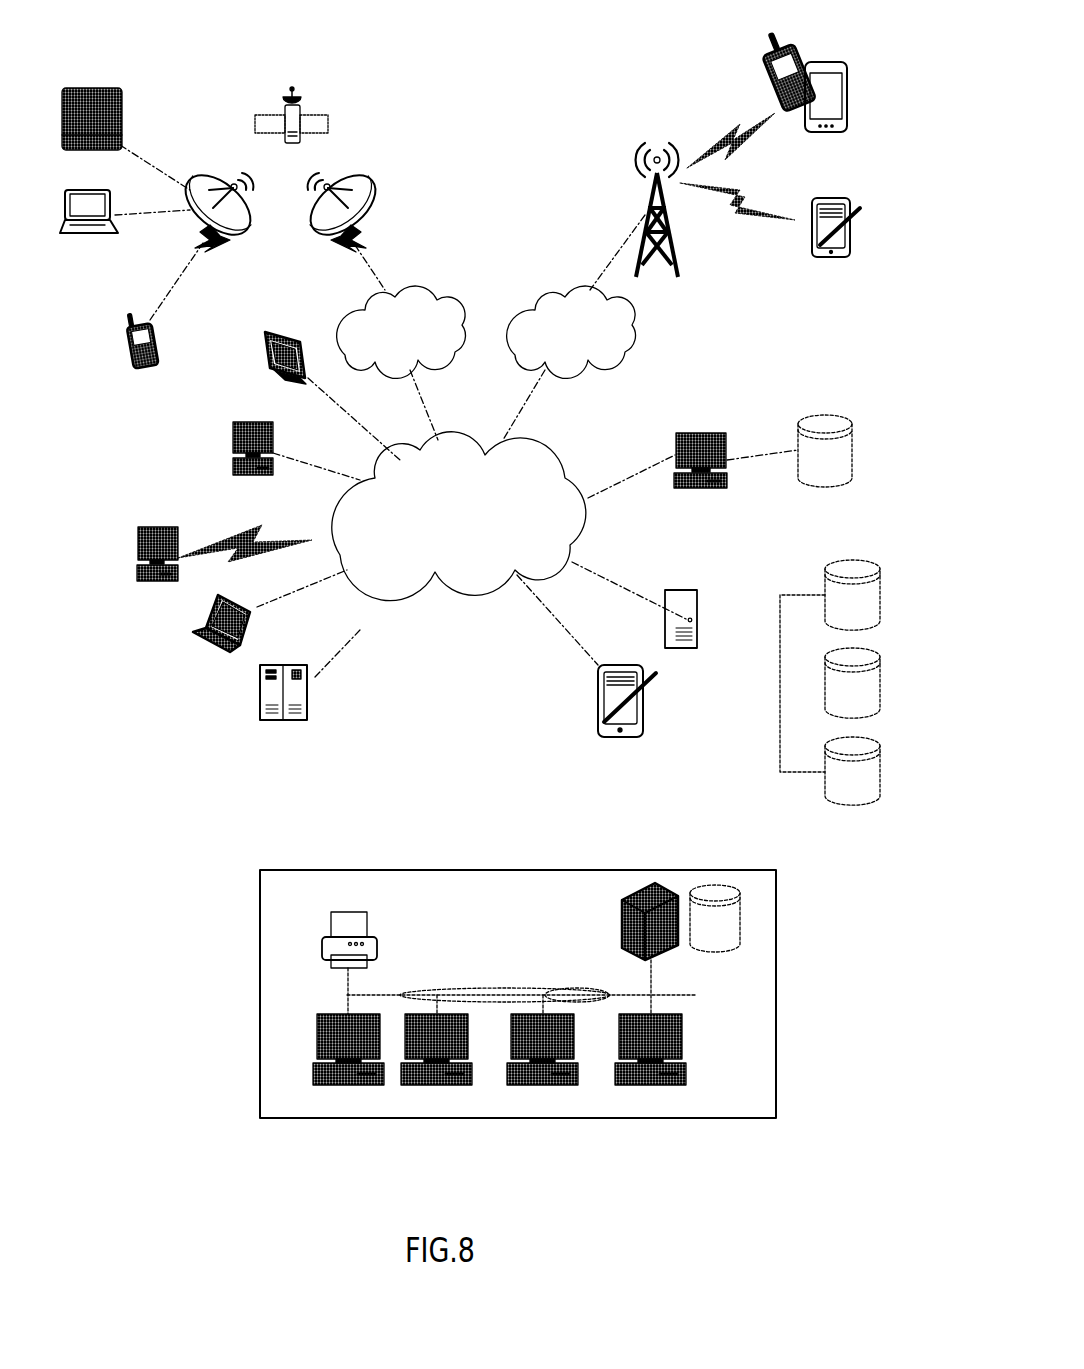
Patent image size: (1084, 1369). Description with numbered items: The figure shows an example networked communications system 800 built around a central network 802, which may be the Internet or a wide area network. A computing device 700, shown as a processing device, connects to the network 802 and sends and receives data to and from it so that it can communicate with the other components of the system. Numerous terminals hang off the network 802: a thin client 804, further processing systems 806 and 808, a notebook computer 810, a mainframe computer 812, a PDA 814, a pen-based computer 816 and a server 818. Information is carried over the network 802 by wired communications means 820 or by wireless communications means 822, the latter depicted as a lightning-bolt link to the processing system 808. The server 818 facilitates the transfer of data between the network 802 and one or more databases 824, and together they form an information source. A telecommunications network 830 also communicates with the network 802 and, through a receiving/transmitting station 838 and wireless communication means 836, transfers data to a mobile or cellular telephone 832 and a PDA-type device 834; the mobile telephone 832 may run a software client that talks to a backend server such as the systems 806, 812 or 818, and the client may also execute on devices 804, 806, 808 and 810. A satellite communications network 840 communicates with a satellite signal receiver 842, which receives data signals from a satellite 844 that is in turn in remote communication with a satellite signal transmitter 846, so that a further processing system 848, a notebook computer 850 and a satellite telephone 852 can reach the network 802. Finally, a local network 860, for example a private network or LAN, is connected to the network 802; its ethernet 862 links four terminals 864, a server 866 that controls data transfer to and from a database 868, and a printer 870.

The networked communications system 800 is at (957, 28).
The network 802 is at (459, 516).
The thin client 804 is at (263, 365).
The further processing system 806 is at (230, 445).
The further processing system 808 is at (135, 563).
The notebook computer 810 is at (190, 630).
The mainframe computer 812 is at (258, 690).
The PDA 814 is at (595, 720).
The pen-based computer 816 is at (825, 451).
The server 818 is at (685, 590).
The wired communications means 820 is at (603, 415).
The wireless communications means 822 is at (245, 556).
The database 824 is at (830, 682).
The telecommunications network 830 is at (571, 332).
The mobile or cellular telephone 832 is at (810, 60).
The PDA-type device 834 is at (855, 235).
The wireless communication means 836 is at (737, 166).
The receiving/transmitting station 838 is at (643, 205).
The satellite communications network 840 is at (401, 332).
The satellite signal receiver 842 is at (380, 190).
The satellite 844 is at (332, 115).
The satellite signal transmitter 846 is at (218, 245).
The further processing system 848 is at (92, 129).
The notebook computer 850 is at (85, 235).
The satellite telephone 852 is at (130, 348).
The computing device 700 is at (713, 444).
The local network 860 is at (257, 1095).
The ethernet 862 is at (428, 988).
The terminal 864 is at (499, 1057).
The server 866 is at (622, 930).
The database 868 is at (715, 918).
The printer 870 is at (322, 958).